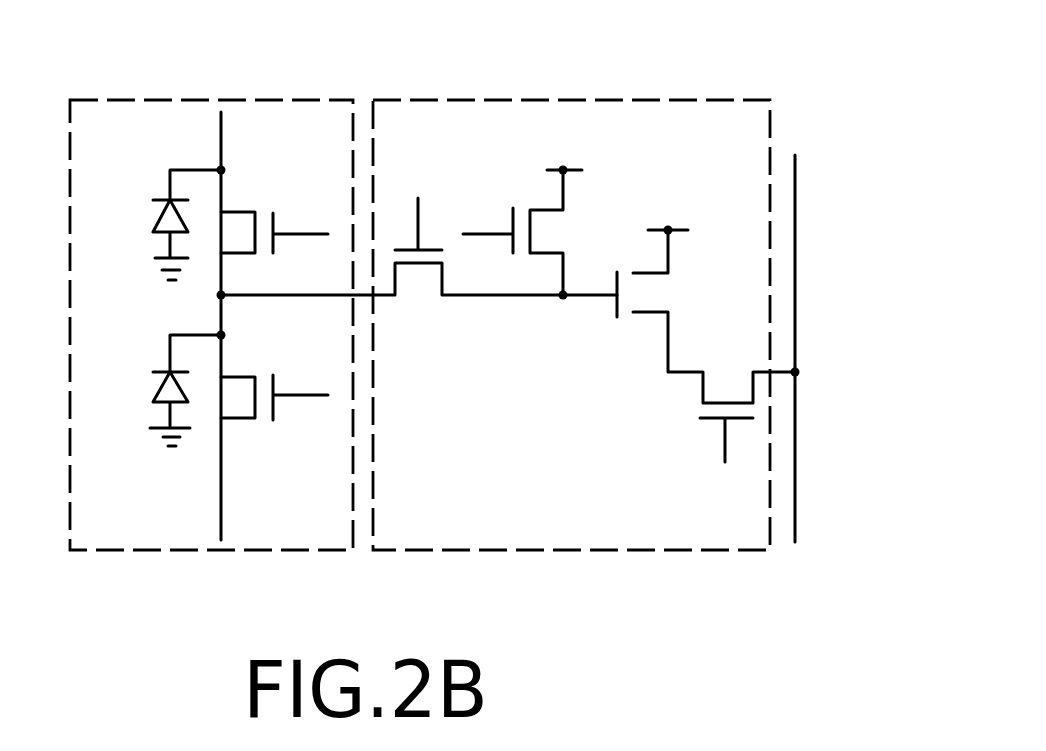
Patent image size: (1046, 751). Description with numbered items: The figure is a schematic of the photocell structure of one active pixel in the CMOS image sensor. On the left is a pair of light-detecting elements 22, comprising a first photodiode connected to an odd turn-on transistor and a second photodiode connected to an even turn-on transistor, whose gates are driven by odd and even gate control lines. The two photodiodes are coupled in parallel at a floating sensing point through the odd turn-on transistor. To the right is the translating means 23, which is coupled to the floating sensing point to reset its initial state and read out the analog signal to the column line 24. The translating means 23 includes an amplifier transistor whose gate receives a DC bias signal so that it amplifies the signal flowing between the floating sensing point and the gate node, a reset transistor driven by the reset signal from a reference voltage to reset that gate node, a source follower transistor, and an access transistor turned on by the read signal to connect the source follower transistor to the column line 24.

The pair of light-detecting elements 22 is at (257, 98).
The translating means 23 is at (577, 98).
The column line 24 is at (795, 420).